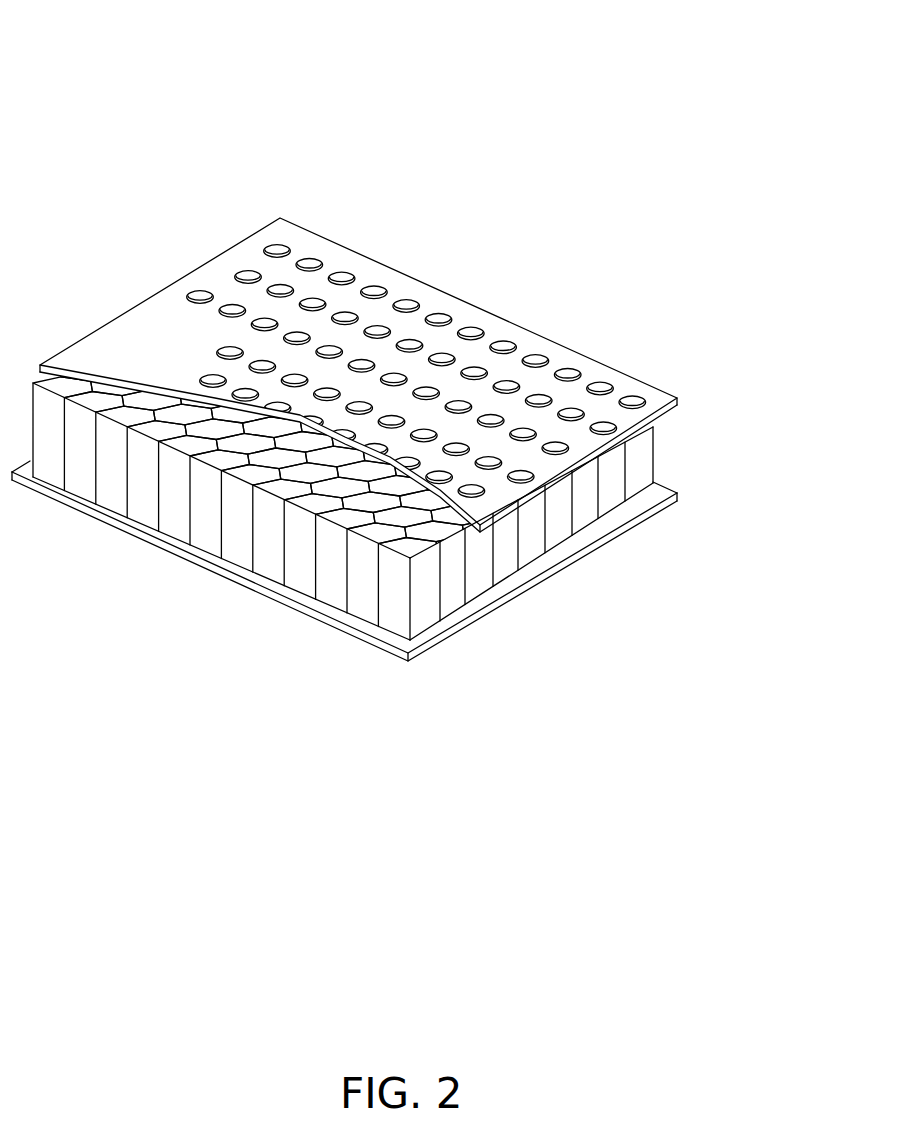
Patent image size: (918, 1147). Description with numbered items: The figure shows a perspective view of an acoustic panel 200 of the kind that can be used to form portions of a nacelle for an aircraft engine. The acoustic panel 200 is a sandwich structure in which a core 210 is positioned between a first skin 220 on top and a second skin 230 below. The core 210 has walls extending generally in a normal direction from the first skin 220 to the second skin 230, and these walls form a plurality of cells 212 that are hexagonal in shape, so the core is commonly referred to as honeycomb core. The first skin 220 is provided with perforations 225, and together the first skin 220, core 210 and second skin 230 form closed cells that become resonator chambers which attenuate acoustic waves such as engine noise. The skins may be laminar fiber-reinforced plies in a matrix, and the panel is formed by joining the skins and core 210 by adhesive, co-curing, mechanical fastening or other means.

The acoustic panel 200 is at (399, 372).
The core 210 is at (409, 547).
The cells 212 is at (427, 592).
The first skin 220 is at (358, 317).
The perforations 225 is at (380, 289).
The second skin 230 is at (587, 560).